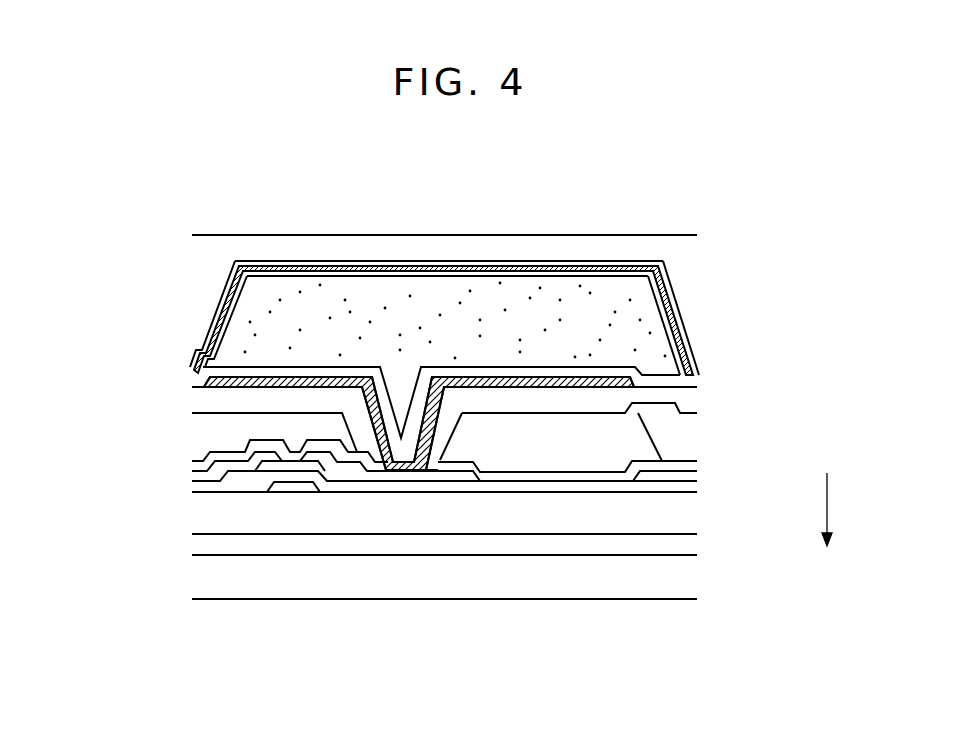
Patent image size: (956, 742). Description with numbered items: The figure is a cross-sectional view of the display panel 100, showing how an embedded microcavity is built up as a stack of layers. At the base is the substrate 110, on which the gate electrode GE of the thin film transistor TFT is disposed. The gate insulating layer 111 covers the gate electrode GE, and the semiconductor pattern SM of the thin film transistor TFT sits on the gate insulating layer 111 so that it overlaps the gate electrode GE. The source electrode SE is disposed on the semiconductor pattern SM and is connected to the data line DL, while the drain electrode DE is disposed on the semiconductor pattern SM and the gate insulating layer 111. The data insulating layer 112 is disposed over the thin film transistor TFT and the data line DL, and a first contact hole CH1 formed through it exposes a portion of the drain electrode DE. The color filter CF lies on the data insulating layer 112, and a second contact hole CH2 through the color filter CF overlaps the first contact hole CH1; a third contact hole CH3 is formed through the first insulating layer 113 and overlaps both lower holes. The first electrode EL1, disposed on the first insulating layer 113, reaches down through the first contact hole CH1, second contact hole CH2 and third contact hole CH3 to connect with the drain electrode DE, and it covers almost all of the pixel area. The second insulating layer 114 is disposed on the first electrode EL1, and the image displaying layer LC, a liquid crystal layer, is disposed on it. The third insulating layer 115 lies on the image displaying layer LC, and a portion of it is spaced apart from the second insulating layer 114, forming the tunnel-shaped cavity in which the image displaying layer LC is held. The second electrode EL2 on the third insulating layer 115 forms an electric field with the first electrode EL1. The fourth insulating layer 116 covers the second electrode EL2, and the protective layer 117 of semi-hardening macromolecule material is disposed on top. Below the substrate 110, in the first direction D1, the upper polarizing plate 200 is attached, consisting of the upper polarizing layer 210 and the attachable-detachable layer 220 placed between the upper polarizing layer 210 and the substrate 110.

The display panel 100 is at (170, 200).
The substrate 110 is at (699, 516).
The gate insulating layer 111 is at (699, 486).
The data insulating layer 112 is at (699, 463).
The first insulating layer 113 is at (699, 405).
The second insulating layer 114 is at (699, 381).
The third insulating layer 115 is at (197, 384).
The fourth insulating layer 116 is at (196, 358).
The protective layer 117 is at (197, 266).
The first electrode EL1 is at (489, 376).
The second electrode EL2 is at (219, 320).
The image displaying layer LC is at (571, 322).
The color filter CF is at (196, 437).
The data line DL is at (699, 475).
The gate electrode GE is at (405, 476).
The source electrode SE is at (247, 466).
The drain electrode DE is at (290, 485).
The semiconductor pattern SM is at (345, 464).
The thin film transistor TFT is at (336, 579).
The first contact hole CH1 is at (433, 468).
The second contact hole CH2 is at (447, 442).
The third contact hole CH3 is at (460, 418).
The upper polarizing plate 200 is at (376, 565).
The upper polarizing layer 210 is at (195, 583).
The attachable-detachable layer 220 is at (195, 545).
The first direction D1 is at (827, 522).